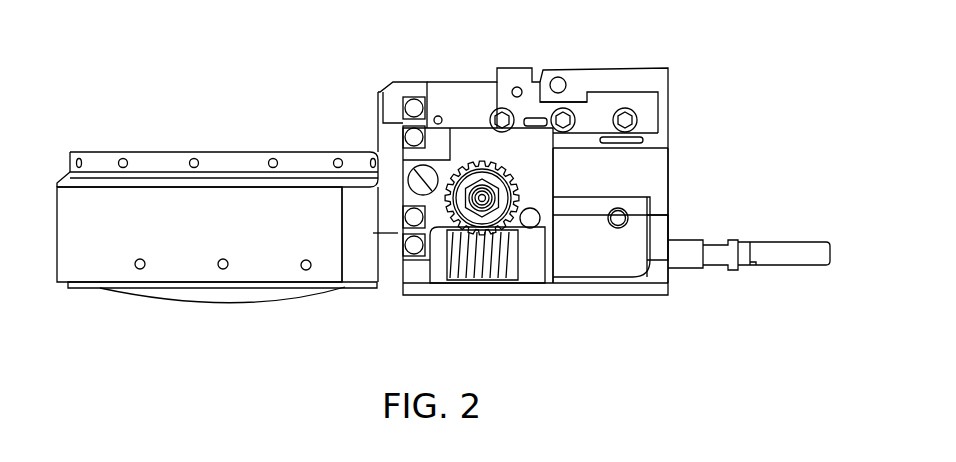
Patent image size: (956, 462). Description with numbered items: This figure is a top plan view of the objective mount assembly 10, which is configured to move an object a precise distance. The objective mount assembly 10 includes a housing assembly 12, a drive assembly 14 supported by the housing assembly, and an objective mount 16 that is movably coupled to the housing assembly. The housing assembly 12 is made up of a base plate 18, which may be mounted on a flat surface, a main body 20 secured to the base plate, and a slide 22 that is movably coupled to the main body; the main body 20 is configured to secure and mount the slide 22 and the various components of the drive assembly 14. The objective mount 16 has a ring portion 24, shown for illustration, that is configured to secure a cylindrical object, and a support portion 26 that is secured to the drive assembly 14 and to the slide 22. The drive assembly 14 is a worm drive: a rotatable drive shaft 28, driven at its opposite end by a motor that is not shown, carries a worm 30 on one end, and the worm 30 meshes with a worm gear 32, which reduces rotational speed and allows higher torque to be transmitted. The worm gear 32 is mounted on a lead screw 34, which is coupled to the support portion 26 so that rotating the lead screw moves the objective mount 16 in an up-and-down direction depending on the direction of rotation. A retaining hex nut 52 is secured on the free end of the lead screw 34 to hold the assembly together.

The objective mount assembly 10 is at (245, 97).
The housing assembly 12 is at (665, 296).
The drive assembly 14 is at (470, 150).
The objective mount 16 is at (57, 285).
The base plate 18 is at (515, 74).
The main body 20 is at (605, 250).
The slide 22 is at (532, 177).
The ring portion 24 is at (67, 215).
The support portion 26 is at (368, 255).
The drive shaft 28 is at (780, 257).
The worm 30 is at (490, 280).
The worm gear 32 is at (485, 160).
The lead screw 34 is at (480, 205).
The retaining hex nut 52 is at (402, 103).